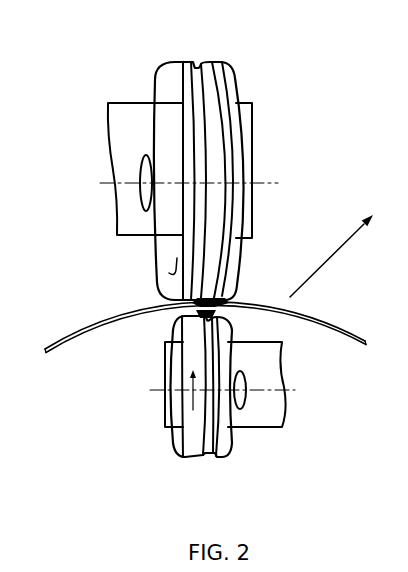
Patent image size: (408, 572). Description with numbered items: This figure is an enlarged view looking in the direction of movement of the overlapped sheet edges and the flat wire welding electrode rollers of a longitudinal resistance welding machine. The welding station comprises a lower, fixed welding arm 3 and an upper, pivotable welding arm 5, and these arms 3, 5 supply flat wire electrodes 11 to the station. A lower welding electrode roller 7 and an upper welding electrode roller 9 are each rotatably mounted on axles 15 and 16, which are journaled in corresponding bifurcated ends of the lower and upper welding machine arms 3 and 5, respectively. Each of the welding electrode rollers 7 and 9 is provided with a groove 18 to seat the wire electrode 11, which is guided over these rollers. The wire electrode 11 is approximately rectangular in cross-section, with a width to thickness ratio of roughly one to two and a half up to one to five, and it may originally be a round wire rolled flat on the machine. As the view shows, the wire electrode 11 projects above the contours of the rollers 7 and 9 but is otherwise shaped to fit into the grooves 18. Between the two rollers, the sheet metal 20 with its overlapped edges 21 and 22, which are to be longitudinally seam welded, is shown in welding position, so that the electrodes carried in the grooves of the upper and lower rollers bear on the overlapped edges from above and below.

The lower welding arm 3 is at (170, 414).
The upper welding arm 5 is at (128, 118).
The lower welding electrode roller 7 is at (195, 443).
The upper welding electrode roller 9 is at (142, 266).
The flat wire electrode 11 is at (218, 297).
The axle 15 is at (248, 386).
The axle 16 is at (143, 176).
The groove 18 is at (210, 64).
The sheet metal 20 is at (333, 326).
The overlapped edge 21 is at (204, 297).
The overlapped edge 22 is at (198, 332).